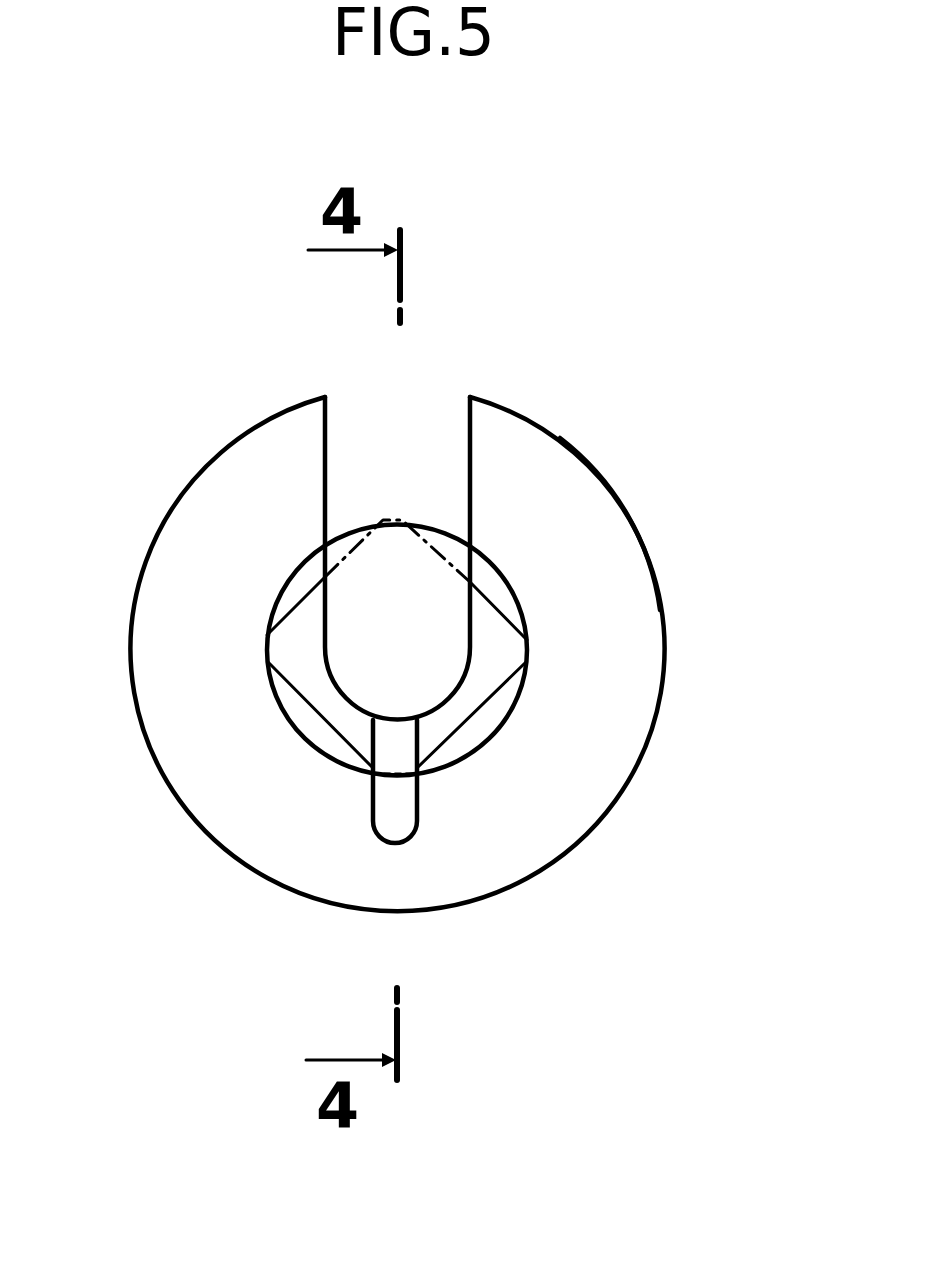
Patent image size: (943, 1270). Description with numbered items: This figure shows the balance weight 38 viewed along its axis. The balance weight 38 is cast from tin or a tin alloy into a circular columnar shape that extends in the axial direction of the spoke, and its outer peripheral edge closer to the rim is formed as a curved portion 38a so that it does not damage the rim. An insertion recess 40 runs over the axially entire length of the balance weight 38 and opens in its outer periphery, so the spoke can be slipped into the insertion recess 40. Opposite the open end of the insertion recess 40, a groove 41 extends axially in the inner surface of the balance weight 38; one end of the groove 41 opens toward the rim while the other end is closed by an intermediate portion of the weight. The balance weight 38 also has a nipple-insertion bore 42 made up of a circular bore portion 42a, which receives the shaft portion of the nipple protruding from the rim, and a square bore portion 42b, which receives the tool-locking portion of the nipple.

The balance weight 38 is at (188, 758).
The curved portion 38a is at (633, 522).
The insertion recess 40 is at (468, 453).
The groove 41 is at (408, 820).
The nipple-insertion bore 42 is at (560, 726).
The circular bore portion 42a is at (500, 602).
The square bore portion 42b is at (462, 726).